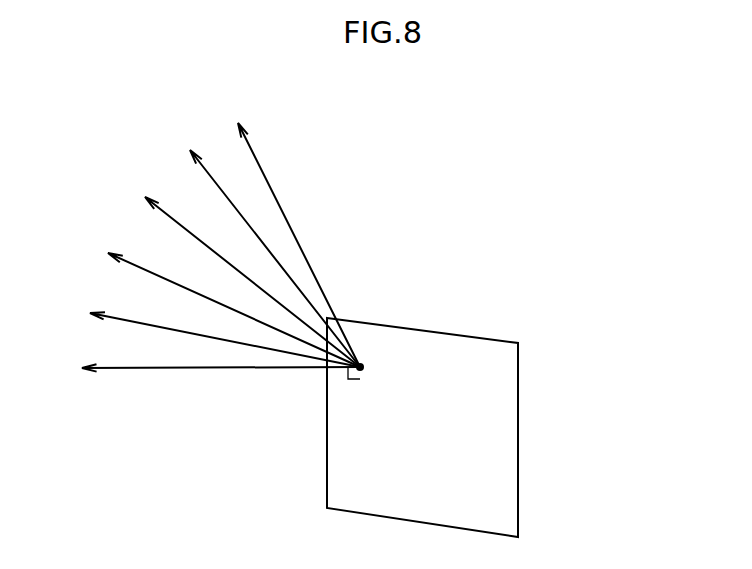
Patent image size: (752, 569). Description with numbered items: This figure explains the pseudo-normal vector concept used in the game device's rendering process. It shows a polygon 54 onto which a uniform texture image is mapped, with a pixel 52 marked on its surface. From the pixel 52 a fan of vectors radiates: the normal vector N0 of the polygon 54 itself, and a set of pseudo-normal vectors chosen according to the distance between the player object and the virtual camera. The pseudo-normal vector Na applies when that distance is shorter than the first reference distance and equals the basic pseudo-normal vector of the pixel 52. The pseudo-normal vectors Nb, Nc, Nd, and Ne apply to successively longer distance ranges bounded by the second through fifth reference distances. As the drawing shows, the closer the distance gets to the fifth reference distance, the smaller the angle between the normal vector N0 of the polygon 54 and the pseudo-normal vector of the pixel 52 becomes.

The pixel 52 is at (361, 365).
The polygon 54 is at (518, 427).
The pseudo-normal vector Na is at (280, 228).
The pseudo-normal vector Nb is at (261, 247).
The pseudo-normal vector Nc is at (237, 271).
The pseudo-normal vector Nd is at (220, 297).
The pseudo-normal vector Ne is at (209, 330).
The normal vector N0 is at (203, 367).